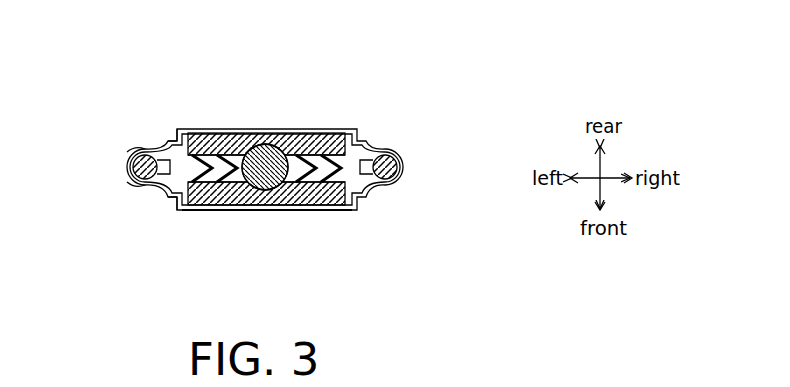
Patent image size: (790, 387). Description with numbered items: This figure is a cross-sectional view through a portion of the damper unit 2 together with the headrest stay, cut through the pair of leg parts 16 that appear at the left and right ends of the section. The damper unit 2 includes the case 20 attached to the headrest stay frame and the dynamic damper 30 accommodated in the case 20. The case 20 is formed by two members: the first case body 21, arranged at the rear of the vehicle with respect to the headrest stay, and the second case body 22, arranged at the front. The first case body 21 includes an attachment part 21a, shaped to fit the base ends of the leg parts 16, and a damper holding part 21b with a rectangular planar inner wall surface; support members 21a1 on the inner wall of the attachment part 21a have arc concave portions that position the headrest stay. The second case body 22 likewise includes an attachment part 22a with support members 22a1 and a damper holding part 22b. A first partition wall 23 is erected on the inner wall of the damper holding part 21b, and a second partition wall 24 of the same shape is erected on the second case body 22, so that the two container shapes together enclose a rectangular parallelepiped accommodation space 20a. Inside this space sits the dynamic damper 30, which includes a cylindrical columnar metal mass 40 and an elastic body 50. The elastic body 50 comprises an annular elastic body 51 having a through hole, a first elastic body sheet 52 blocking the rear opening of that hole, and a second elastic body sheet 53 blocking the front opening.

The damper unit 2 is at (407, 117).
The leg part 16 is at (145, 186).
The case 20 is at (327, 128).
The accommodation space 20a is at (307, 211).
The first case body 21 is at (352, 134).
The attachment part 21a is at (127, 152).
The support member 21a1 is at (162, 142).
The damper holding part 21b is at (228, 130).
The second case body 22 is at (355, 207).
The attachment part 22a is at (130, 188).
The support member 22a1 is at (168, 197).
The damper holding part 22b is at (238, 207).
The first partition wall 23 is at (176, 128).
The second partition wall 24 is at (177, 210).
The dynamic damper 30 is at (279, 101).
The mass 40 is at (283, 128).
The elastic body 50 is at (268, 128).
The annular elastic body 51 is at (207, 205).
The first elastic body sheet 52 is at (258, 146).
The second elastic body sheet 53 is at (275, 207).